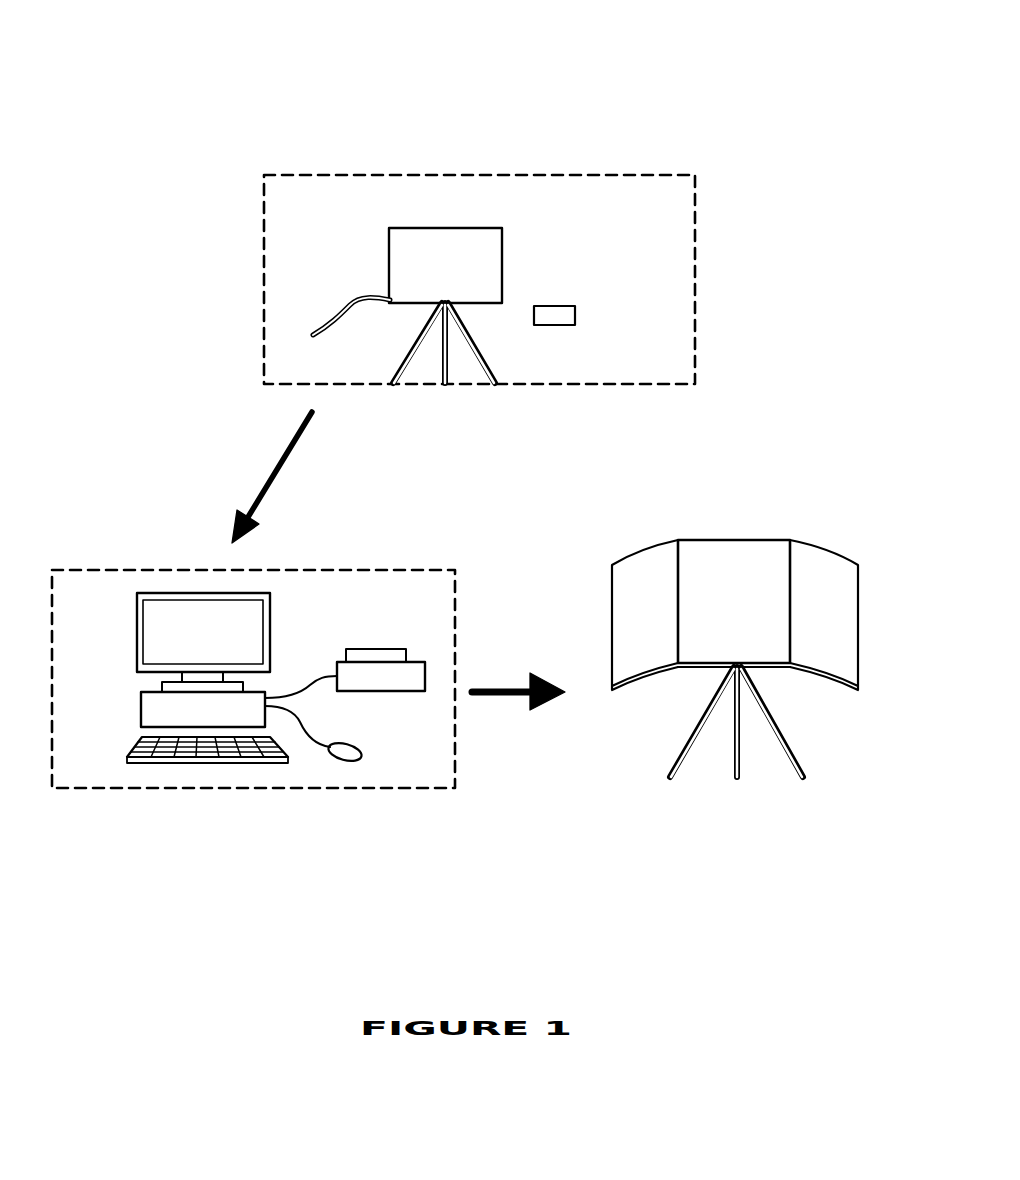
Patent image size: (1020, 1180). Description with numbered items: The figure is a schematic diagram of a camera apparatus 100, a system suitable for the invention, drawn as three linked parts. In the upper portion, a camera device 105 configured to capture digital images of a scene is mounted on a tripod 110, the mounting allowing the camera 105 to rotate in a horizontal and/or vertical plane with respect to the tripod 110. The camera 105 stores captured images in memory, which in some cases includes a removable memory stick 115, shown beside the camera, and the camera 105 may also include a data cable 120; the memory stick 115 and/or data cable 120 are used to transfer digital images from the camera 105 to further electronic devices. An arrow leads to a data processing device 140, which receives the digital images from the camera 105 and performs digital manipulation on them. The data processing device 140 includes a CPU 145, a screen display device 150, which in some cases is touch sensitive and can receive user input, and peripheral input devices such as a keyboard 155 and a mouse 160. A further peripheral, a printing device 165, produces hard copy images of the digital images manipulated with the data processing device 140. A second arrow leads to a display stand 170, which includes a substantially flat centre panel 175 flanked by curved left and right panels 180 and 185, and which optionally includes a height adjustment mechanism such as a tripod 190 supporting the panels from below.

The camera apparatus 100 is at (750, 95).
The camera device 105 is at (478, 255).
The tripod 110 is at (487, 362).
The removable memory stick 115 is at (577, 312).
The data cable 120 is at (337, 310).
The data processing device 140 is at (126, 570).
The CPU 145 is at (150, 713).
The screen display device 150 is at (205, 610).
The keyboard 155 is at (255, 750).
The mouse 160 is at (348, 760).
The printing device 165 is at (393, 678).
The display stand 170 is at (709, 832).
The centre panel 175 is at (752, 557).
The left panel 180 is at (645, 568).
The right panel 185 is at (825, 572).
The tripod 190 is at (812, 778).